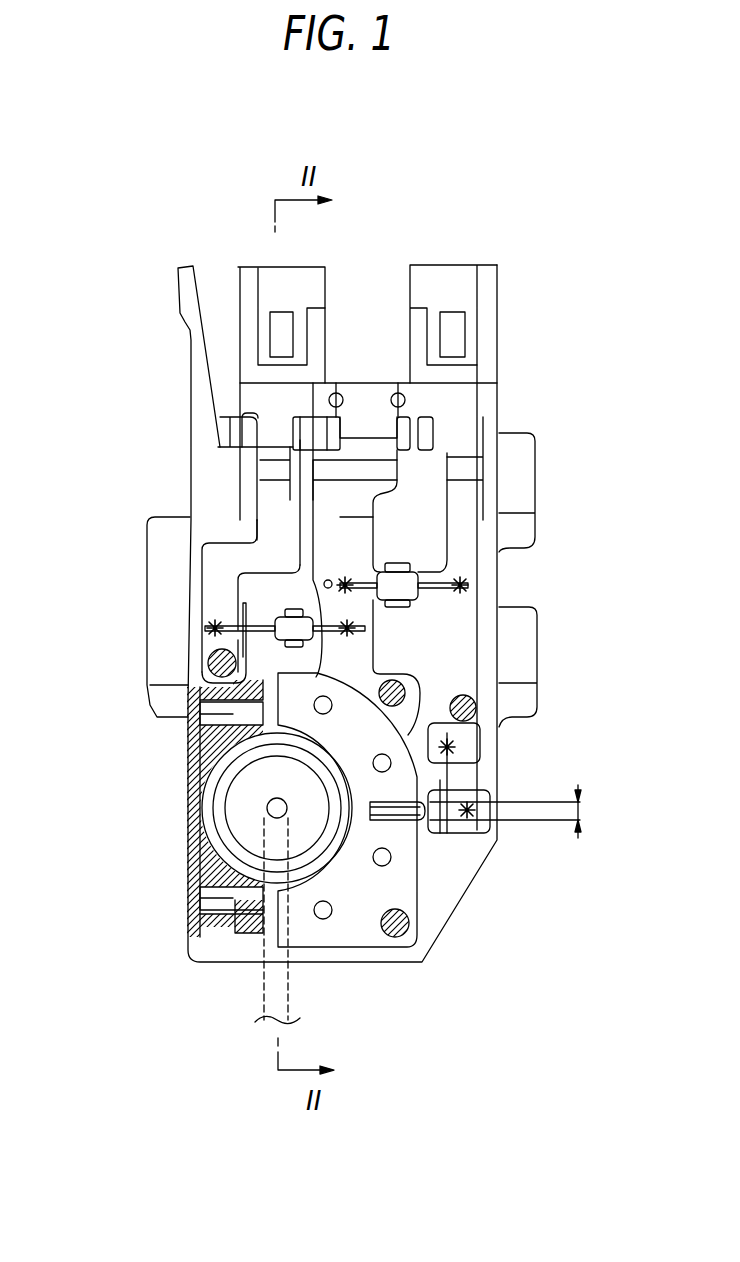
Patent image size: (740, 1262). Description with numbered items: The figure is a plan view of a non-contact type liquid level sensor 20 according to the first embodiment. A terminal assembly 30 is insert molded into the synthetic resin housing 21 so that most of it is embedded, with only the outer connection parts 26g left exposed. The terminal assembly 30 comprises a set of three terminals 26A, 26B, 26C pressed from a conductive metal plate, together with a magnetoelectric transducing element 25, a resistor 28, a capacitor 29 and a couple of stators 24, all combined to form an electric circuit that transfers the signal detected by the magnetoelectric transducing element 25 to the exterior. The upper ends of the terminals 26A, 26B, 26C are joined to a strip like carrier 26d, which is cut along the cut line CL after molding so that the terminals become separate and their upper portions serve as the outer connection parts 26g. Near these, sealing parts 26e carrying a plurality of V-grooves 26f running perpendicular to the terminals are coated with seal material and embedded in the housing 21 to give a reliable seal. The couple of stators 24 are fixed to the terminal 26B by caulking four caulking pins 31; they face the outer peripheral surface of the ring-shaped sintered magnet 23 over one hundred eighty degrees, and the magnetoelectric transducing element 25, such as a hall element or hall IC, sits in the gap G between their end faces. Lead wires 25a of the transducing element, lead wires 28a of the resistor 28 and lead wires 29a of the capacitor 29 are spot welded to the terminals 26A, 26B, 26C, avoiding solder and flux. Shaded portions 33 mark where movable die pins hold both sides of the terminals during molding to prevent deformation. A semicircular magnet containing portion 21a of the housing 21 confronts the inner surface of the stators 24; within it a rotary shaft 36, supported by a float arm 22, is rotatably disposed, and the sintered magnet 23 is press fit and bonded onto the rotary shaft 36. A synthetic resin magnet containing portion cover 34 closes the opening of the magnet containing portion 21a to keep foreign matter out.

The non-contact type liquid level sensor 20 is at (535, 208).
The housing 21 is at (508, 312).
The magnet containing portion 21a is at (200, 887).
The float arm 22 is at (263, 990).
The sintered magnet 23 is at (245, 735).
The stators 24 is at (398, 850).
The magnetoelectric transducing element 25 is at (401, 828).
The lead wires 25a is at (448, 797).
The terminal 26A is at (262, 465).
The terminal 26B is at (440, 445).
The terminal 26C is at (470, 515).
The strip like carrier 26d is at (263, 397).
The sealing parts 26e is at (283, 478).
The V-grooves 26f is at (300, 500).
The outer connection parts 26g is at (280, 458).
The resistor 28 is at (215, 575).
The lead wires 28a is at (272, 617).
The capacitor 29 is at (398, 546).
The lead wires 29a is at (455, 622).
The terminal assembly 30 is at (358, 372).
The caulking pins 31 is at (387, 862).
The shaded portions 33 is at (212, 652).
The magnet containing portion cover 34 is at (180, 842).
The rotary shaft 36 is at (228, 788).
The cut line CL is at (345, 395).
The gap G is at (518, 811).